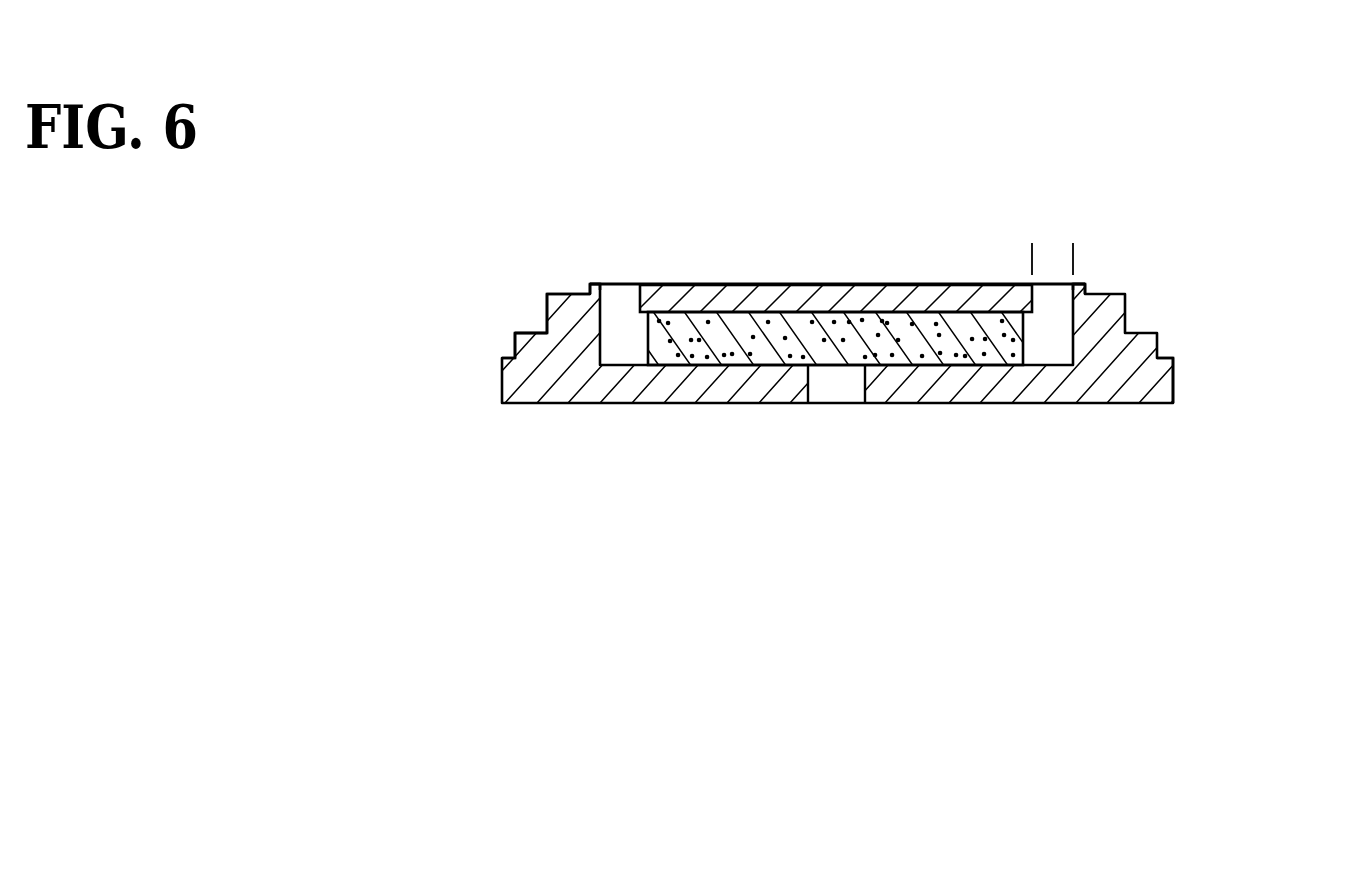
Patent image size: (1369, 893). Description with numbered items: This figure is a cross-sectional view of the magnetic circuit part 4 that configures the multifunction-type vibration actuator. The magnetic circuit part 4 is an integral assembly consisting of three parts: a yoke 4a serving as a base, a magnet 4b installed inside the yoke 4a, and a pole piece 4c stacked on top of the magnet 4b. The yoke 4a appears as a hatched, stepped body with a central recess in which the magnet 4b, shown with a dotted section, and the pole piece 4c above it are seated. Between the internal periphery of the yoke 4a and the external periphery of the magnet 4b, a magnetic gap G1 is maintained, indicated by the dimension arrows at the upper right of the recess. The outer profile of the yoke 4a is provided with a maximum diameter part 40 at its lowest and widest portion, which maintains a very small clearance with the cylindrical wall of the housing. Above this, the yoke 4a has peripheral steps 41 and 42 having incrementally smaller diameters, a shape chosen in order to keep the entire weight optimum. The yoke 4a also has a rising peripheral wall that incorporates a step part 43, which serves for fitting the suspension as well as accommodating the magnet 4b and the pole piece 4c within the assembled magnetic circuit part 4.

The magnetic circuit part 4 is at (805, 331).
The yoke 4a is at (1176, 383).
The magnet 4b is at (737, 340).
The pole piece 4c is at (918, 293).
The maximum diameter part 40 is at (502, 380).
The peripheral step 41 is at (516, 340).
The peripheral step 42 is at (547, 304).
The step part 43 is at (590, 284).
The magnetic gap G1 is at (1000, 258).